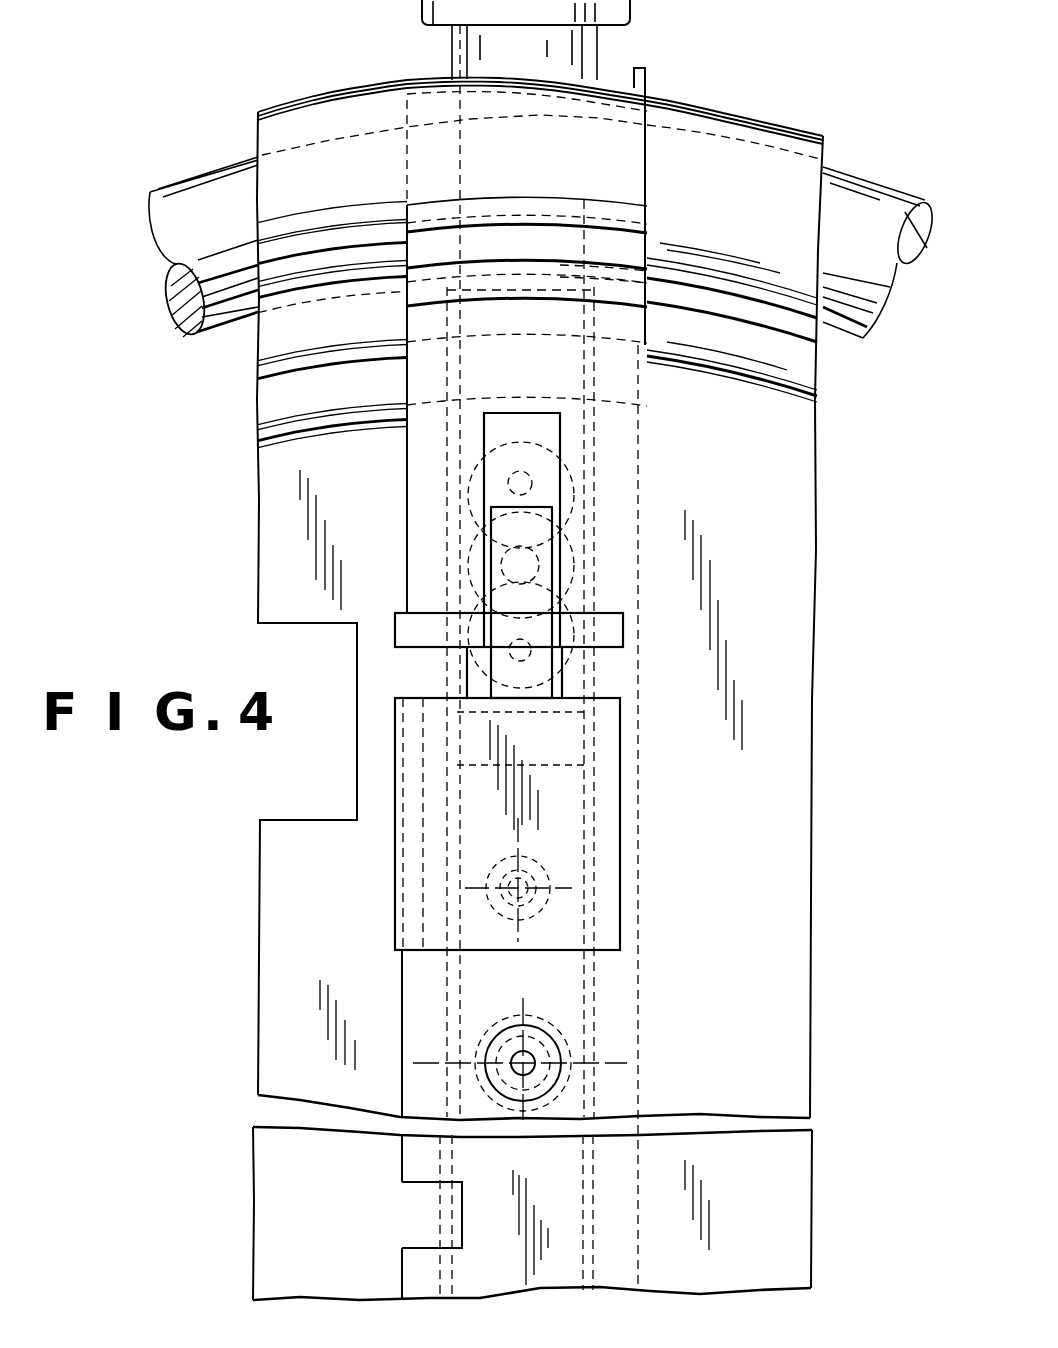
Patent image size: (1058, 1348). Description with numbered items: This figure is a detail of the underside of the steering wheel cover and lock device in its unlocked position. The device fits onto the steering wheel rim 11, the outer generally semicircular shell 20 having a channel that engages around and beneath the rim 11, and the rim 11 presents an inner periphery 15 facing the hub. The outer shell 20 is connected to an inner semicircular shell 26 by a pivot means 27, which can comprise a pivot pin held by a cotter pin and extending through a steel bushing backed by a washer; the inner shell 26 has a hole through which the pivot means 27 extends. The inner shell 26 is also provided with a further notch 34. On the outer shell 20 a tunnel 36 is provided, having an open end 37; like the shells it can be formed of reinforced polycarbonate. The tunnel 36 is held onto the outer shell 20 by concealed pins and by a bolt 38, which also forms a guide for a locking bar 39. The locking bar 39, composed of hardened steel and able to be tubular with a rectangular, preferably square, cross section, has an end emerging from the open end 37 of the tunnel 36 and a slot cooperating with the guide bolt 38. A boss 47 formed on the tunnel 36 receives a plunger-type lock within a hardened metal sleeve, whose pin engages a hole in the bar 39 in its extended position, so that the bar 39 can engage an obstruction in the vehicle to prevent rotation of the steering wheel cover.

The rim 11 is at (163, 210).
The inner periphery 15 is at (230, 330).
The outer generally semicircular shell 20 is at (760, 565).
The inner semicircular shell 26 is at (290, 516).
The pivot means 27 is at (547, 1050).
The notch 34 is at (423, 1188).
The tunnel 36 is at (638, 848).
The open end 37 is at (650, 240).
The bolt 38 is at (497, 902).
The locking bar 39 is at (603, 53).
The boss 47 is at (563, 528).